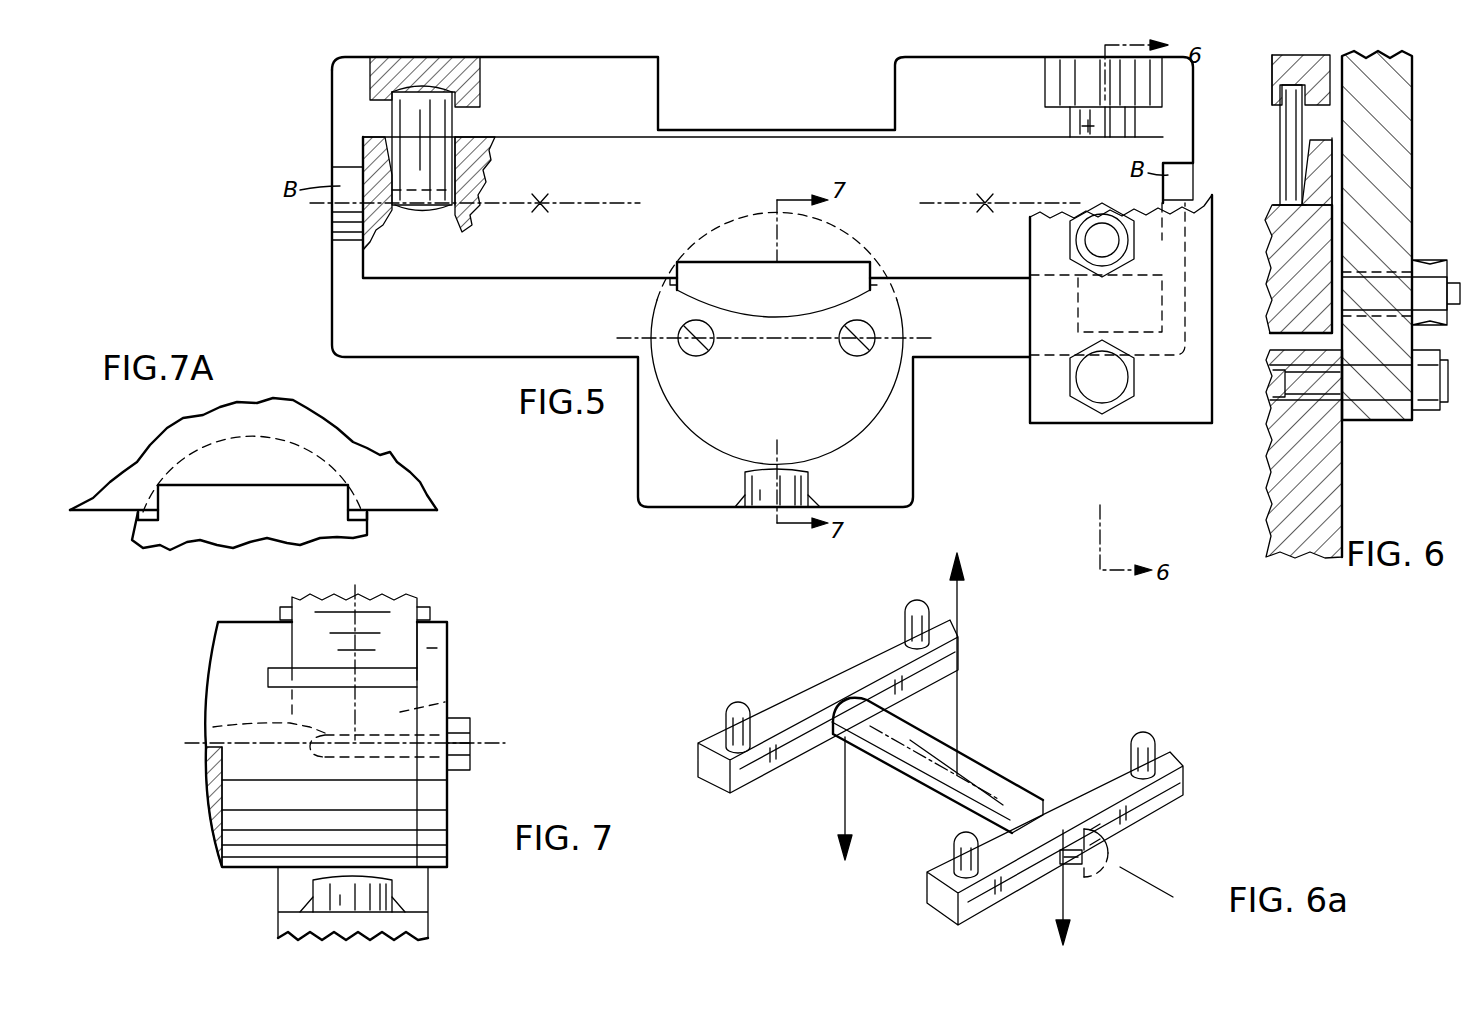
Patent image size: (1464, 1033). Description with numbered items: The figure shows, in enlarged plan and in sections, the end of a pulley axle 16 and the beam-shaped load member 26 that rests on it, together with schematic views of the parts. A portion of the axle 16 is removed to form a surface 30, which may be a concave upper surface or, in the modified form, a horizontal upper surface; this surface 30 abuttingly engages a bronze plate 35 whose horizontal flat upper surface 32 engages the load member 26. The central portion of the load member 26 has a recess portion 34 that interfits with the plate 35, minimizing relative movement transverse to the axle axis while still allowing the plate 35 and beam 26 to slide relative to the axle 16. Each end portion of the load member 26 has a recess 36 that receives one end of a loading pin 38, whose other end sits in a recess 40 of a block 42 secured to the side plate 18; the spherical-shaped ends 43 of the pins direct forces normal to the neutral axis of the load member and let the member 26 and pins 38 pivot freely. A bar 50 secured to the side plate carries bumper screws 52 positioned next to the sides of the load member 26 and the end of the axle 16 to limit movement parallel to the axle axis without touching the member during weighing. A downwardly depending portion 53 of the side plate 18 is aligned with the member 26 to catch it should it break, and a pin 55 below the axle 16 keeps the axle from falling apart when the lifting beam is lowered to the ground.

In FIG. 5, the pulley axle 16 is at (745, 408).
In FIG. 7, the pulley axle 16 is at (400, 798).
In FIG. 6A, the pulley axle 16 is at (975, 772).
In FIG. 5, the side plate 18 is at (655, 80).
In FIG. 6, the side plate 18 is at (1322, 462).
In FIG. 5, the load member 26 is at (740, 146).
In FIG. 6, the load member 26 is at (1337, 241).
In FIG. 6A, the load member 26 is at (833, 680).
In FIG. 5, the surface 30 is at (762, 312).
In FIG. 7, the surface 30 is at (420, 633).
In FIG. 6A, the surface 30 is at (1062, 856).
In FIG. 5, the horizontal flat upper surface 32 is at (740, 262).
In FIG. 7, the horizontal flat upper surface 32 is at (417, 672).
In FIG. 6A, the horizontal flat upper surface 32 is at (1047, 857).
In FIG. 5, the recess portion 34 is at (850, 262).
In FIG. 6A, the recess portion 34 is at (1107, 832).
In FIG. 5, the bronze plate 35 is at (795, 306).
In FIG. 7, the bronze plate 35 is at (420, 705).
In FIG. 6A, the bronze plate 35 is at (1086, 878).
In FIG. 5, the recess 36 is at (365, 137).
In FIG. 5, the loading pin 38 is at (432, 128).
In FIG. 6, the loading pin 38 is at (1303, 137).
In FIG. 6A, the loading pin 38 is at (905, 622).
In FIG. 5, the recess 40 is at (455, 95).
In FIG. 6, the recess 40 is at (1275, 90).
In FIG. 5, the block 42 is at (345, 82).
In FIG. 5, the spherical-shaped ends 43 is at (400, 100).
In FIG. 5, the bar 50 is at (1032, 398).
In FIG. 6, the bar 50 is at (1412, 198).
In FIG. 5, the bumper screw 52 is at (1105, 250).
In FIG. 6, the bumper screw 52 is at (1385, 275).
In FIG. 5, the portion 53 is at (880, 100).
In FIG. 5, the pin 55 is at (810, 488).
In FIG. 7, the pin 55 is at (390, 896).